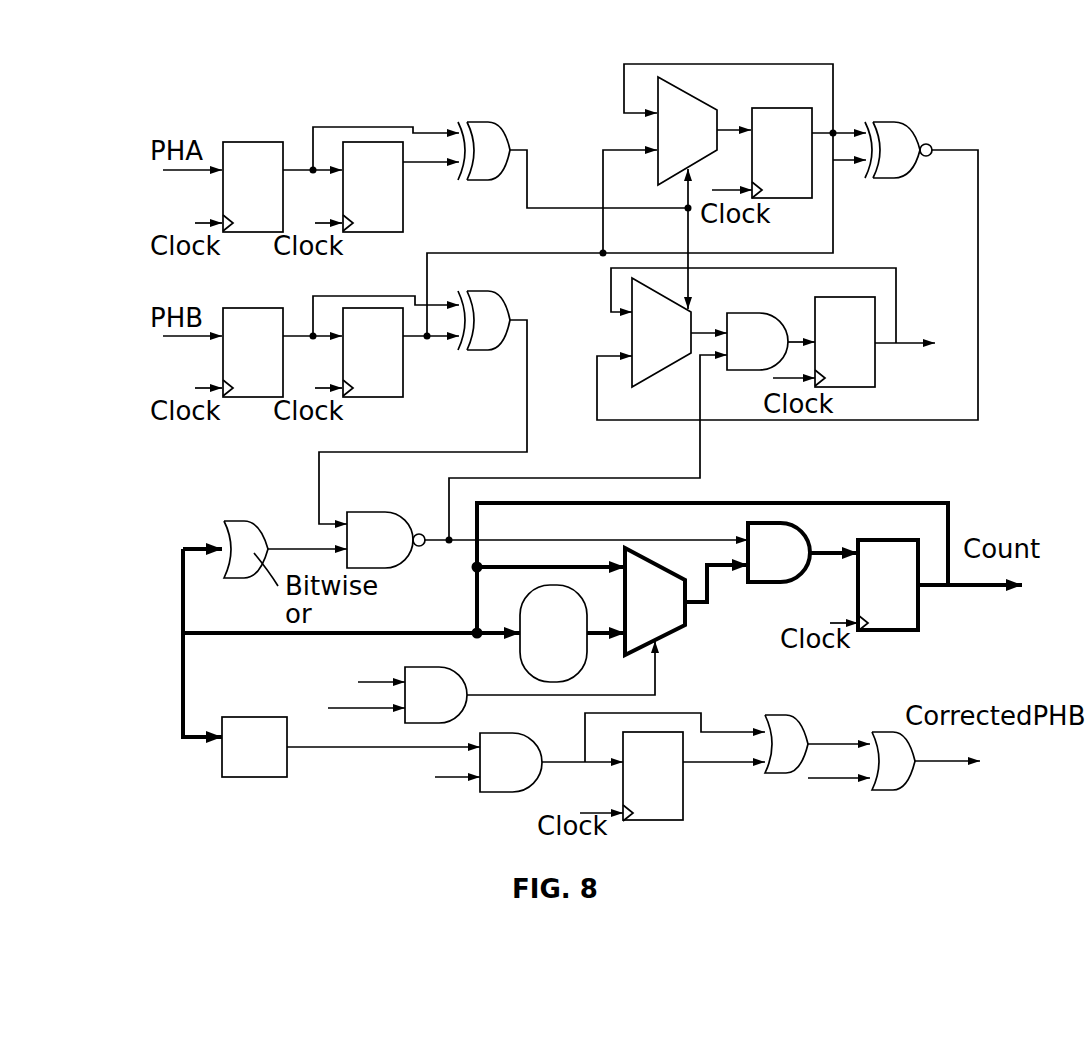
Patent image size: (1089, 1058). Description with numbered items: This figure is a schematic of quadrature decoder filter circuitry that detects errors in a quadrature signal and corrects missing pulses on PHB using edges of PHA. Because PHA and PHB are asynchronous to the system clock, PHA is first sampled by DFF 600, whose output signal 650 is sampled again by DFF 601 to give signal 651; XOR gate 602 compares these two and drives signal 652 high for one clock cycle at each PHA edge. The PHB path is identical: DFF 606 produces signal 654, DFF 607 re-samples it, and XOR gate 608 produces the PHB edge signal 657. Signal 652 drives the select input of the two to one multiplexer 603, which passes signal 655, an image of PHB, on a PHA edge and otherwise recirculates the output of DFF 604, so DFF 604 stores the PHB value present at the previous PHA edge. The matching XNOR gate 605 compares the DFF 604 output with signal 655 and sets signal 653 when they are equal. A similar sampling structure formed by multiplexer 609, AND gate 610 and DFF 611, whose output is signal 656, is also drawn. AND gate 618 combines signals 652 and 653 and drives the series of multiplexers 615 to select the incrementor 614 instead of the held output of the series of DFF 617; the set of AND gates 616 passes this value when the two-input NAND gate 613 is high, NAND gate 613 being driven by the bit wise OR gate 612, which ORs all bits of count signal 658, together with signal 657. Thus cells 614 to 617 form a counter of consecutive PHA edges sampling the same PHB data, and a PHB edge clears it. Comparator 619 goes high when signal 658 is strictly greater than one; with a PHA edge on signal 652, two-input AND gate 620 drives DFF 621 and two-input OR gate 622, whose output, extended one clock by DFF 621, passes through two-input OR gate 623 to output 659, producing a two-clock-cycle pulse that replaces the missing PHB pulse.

The DFF 600 is at (256, 142).
The DFF 601 is at (355, 233).
The XOR gate 602 is at (470, 122).
The 2 to 1 multiplexer 603 is at (689, 92).
The DFF 604 is at (772, 198).
The XNOR gate 605 is at (884, 179).
The DFF 606 is at (247, 308).
The DFF 607 is at (386, 398).
The XOR gate 608 is at (484, 351).
The multiplexer 609 is at (638, 388).
The AND gate 610 is at (762, 371).
The DFF 611 is at (876, 374).
The bit wise OR gate 612 is at (236, 521).
The two-input NAND gate 613 is at (386, 512).
The incrementor 614 is at (557, 585).
The series of multiplexers 615 is at (664, 637).
The set of AND gates 616 is at (745, 530).
The series of DFF 617 is at (888, 540).
The two-input AND gate 618 is at (438, 667).
The comparator 619 is at (254, 717).
The two-input AND gate 620 is at (488, 733).
The DFF 621 is at (644, 821).
The two-input OR gate 622 is at (772, 775).
The two-input OR gate 623 is at (884, 791).
The signal 650 is at (369, 127).
The signal 651 is at (410, 166).
The signal 652 is at (597, 208).
The signal 653 is at (950, 150).
The signal 654 is at (346, 296).
The signal 655 is at (513, 253).
The signal 656 is at (897, 305).
The signal 657 is at (507, 452).
The signal 658 is at (950, 530).
The output 659 is at (955, 762).